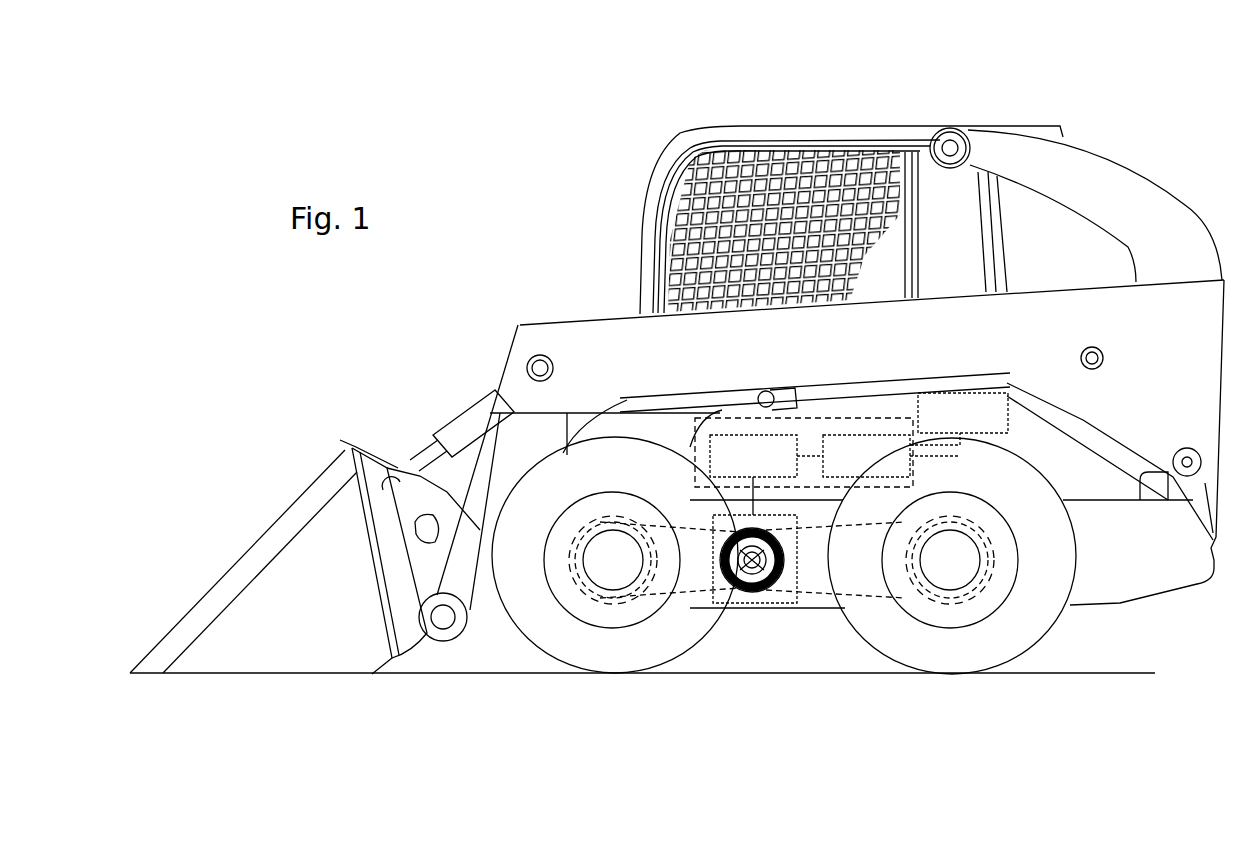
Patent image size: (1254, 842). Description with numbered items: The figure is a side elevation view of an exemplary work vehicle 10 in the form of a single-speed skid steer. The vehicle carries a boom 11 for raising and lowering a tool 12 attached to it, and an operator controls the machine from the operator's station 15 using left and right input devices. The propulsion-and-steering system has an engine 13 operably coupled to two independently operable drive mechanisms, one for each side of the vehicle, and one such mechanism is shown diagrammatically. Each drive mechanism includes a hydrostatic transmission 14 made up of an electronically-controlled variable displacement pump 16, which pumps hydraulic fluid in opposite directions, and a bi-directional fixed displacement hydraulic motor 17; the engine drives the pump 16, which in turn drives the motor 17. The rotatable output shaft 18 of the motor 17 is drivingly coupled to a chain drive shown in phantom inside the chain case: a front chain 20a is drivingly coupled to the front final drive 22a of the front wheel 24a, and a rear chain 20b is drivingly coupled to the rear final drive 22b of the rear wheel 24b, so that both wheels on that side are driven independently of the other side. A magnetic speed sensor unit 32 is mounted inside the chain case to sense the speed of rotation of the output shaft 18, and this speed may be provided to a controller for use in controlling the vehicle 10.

The work vehicle 10 is at (1160, 92).
The boom 11 is at (566, 325).
The tool 12 is at (293, 516).
The engine 13 is at (1012, 420).
The hydrostatic transmission 14 is at (655, 455).
The operator's station 15 is at (720, 127).
The variable displacement pump 16 is at (843, 435).
The hydraulic motor 17 is at (730, 435).
The output shaft 18 is at (716, 515).
The front chain 20a is at (692, 595).
The rear chain 20b is at (863, 610).
The front final drive 22a is at (608, 568).
The rear final drive 22b is at (948, 575).
The front wheel 24a is at (540, 640).
The rear wheel 24b is at (1035, 637).
The sensor unit 32 is at (762, 597).